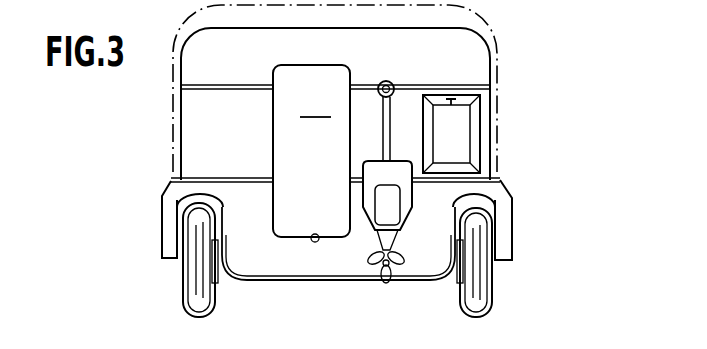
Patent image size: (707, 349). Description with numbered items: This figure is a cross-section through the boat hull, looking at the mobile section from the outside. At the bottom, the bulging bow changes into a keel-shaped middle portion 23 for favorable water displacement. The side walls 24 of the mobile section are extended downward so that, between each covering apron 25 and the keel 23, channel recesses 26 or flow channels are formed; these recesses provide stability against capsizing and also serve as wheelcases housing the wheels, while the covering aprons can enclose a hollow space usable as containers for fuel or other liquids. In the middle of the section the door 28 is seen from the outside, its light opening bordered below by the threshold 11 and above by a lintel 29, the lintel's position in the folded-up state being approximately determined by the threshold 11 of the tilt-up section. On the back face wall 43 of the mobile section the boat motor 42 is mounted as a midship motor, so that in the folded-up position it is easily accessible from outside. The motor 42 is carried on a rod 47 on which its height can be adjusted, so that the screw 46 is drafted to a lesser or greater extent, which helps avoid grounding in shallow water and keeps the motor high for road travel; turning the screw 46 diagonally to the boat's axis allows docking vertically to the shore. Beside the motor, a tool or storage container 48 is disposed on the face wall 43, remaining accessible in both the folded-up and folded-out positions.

The threshold 11 is at (323, 247).
The keel-shaped middle portion 23 is at (271, 290).
The side walls 24 is at (181, 164).
The covering apron 25 is at (163, 250).
The channel recesses 26 is at (190, 203).
The door 28 is at (311, 151).
The lintel 29 is at (287, 66).
The boat motor 42 is at (400, 166).
The back face wall 43 is at (472, 70).
The screw 46 is at (386, 270).
The rod 47 is at (391, 120).
The tool or storage container 48 is at (460, 157).